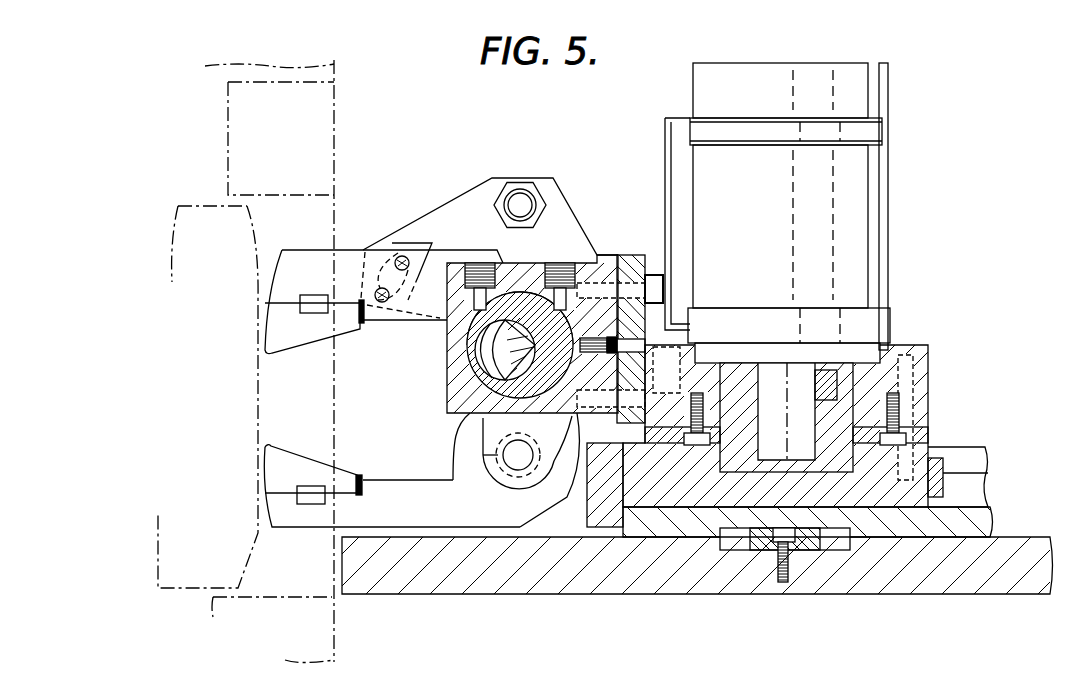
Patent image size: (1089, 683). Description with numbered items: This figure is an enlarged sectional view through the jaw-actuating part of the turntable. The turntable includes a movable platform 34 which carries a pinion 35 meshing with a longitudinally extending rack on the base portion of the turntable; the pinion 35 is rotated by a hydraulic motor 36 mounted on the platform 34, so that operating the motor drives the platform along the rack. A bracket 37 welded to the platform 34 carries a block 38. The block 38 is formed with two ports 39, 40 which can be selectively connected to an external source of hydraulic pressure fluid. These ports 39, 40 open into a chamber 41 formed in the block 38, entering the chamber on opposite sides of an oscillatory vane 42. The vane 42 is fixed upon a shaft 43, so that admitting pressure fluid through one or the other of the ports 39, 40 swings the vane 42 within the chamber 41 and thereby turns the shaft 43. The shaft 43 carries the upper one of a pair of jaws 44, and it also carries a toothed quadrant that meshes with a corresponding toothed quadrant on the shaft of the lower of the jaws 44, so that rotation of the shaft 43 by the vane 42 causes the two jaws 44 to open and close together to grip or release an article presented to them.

The movable platform 34 is at (922, 375).
The pinion 35 is at (838, 428).
The hydraulic motor 36 is at (876, 250).
The bracket 37 is at (624, 266).
The block 38 is at (458, 397).
The port 39 is at (558, 262).
The port 40 is at (480, 262).
The chamber 41 is at (527, 302).
The oscillatory vane 42 is at (508, 312).
The shaft 43 is at (480, 358).
The jaws 44 is at (364, 234).